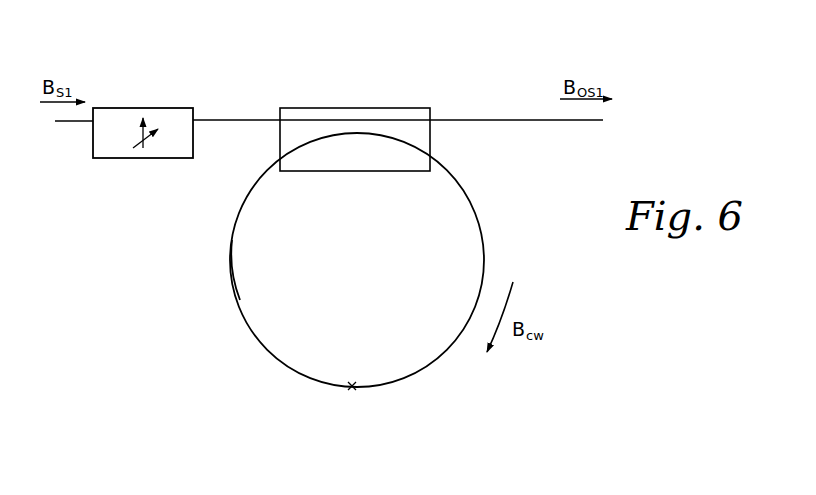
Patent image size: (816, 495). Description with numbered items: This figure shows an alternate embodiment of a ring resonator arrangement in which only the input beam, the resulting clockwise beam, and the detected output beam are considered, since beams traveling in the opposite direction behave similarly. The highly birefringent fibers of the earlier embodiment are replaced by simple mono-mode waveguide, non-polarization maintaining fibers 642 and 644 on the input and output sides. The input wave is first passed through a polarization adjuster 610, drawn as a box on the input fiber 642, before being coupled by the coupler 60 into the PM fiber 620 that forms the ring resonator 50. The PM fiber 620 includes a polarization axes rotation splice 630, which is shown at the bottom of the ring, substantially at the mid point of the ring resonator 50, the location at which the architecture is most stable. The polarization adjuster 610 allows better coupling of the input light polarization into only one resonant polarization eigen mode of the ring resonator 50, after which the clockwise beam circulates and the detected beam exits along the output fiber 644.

The polarization adjuster 610 is at (117, 105).
The non-polarization maintaining fiber 642 is at (246, 114).
The non-polarization maintaining fiber 644 is at (491, 116).
The coupler 60 is at (381, 106).
The ring resonator 50 is at (373, 277).
The PM fiber 620 is at (232, 262).
The polarization axes rotation splice 630 is at (352, 388).